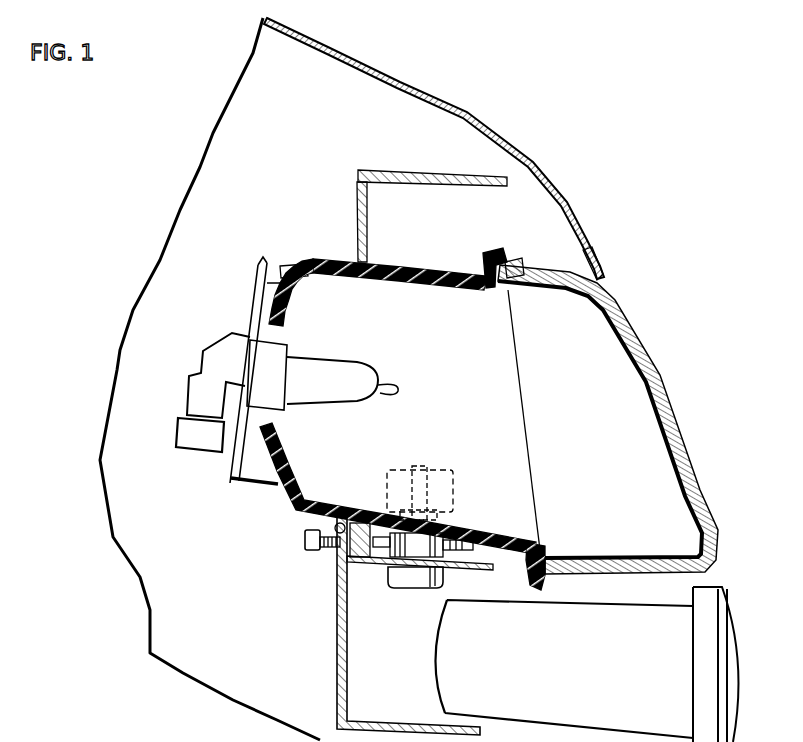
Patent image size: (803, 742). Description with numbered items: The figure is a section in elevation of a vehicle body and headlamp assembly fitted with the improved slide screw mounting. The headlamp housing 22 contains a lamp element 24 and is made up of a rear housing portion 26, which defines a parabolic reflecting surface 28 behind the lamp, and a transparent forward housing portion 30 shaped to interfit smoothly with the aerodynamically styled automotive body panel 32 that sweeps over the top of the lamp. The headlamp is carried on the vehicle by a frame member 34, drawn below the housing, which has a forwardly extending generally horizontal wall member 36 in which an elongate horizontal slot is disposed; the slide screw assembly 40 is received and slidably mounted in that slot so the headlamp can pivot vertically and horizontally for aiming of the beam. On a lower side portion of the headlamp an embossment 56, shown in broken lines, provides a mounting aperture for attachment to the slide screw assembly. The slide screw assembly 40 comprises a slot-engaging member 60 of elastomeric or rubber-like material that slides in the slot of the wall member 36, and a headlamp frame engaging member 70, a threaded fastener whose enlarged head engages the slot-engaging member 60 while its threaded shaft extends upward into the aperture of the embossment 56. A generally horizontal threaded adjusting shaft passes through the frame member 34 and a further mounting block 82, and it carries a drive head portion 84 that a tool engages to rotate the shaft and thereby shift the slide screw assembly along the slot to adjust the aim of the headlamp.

The headlamp housing 22 is at (421, 250).
The lamp element 24 is at (400, 390).
The rear housing portion 26 is at (453, 292).
The parabolic reflecting surface 28 is at (310, 287).
The forward housing portion 30 is at (639, 362).
The automotive body panel 32 is at (486, 133).
The frame member 34 is at (337, 613).
The wall member 36 is at (472, 566).
The slide screw assembly 40 is at (417, 602).
The embossment 56 is at (452, 490).
The slot-engaging member 60 is at (390, 590).
The headlamp frame engaging member 70 is at (407, 466).
The mounting block 82 is at (346, 553).
The drive head portion 84 is at (305, 538).